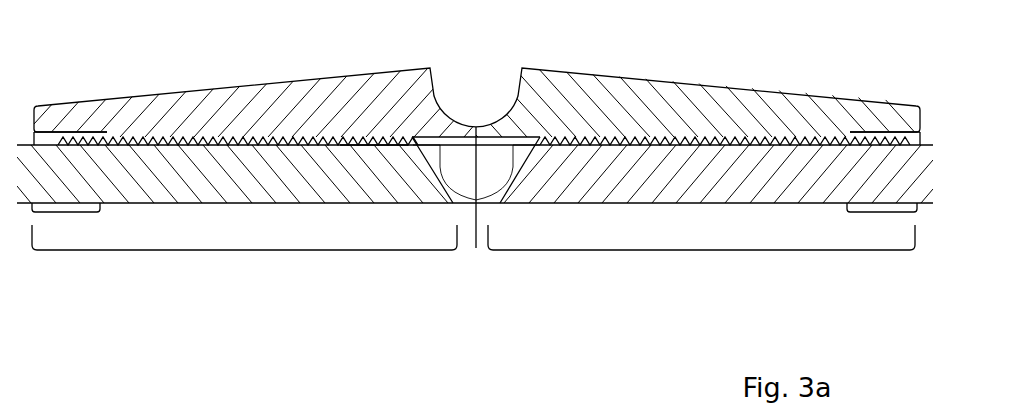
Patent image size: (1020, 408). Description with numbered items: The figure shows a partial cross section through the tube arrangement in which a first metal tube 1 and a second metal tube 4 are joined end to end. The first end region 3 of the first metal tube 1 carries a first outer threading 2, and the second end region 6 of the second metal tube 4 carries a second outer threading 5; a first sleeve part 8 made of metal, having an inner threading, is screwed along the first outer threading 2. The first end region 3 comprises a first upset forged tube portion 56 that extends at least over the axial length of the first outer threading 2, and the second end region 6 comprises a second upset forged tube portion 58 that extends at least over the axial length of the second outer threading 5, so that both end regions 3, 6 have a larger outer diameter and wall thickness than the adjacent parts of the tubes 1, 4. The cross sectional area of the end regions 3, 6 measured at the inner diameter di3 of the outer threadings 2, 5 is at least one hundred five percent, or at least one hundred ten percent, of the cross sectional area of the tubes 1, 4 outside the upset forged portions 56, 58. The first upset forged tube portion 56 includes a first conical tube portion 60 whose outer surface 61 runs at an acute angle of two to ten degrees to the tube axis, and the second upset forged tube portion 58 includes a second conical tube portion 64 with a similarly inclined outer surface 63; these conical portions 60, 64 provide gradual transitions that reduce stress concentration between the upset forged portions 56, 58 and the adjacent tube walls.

The first metal tube 1 is at (25, 190).
The first outer threading 2 is at (230, 140).
The first end region 3 is at (245, 250).
The second metal tube 4 is at (925, 190).
The second outer threading 5 is at (736, 140).
The second end region 6 is at (702, 250).
The first sleeve part 8 is at (429, 407).
The first upset forged tube portion 56 is at (180, 187).
The second upset forged tube portion 58 is at (572, 192).
The first conical tube portion 60 is at (67, 212).
The outer surface 61 is at (58, 141).
The outer surface 63 is at (904, 142).
The second conical tube portion 64 is at (882, 212).
The inner diameter di3 is at (373, 145).